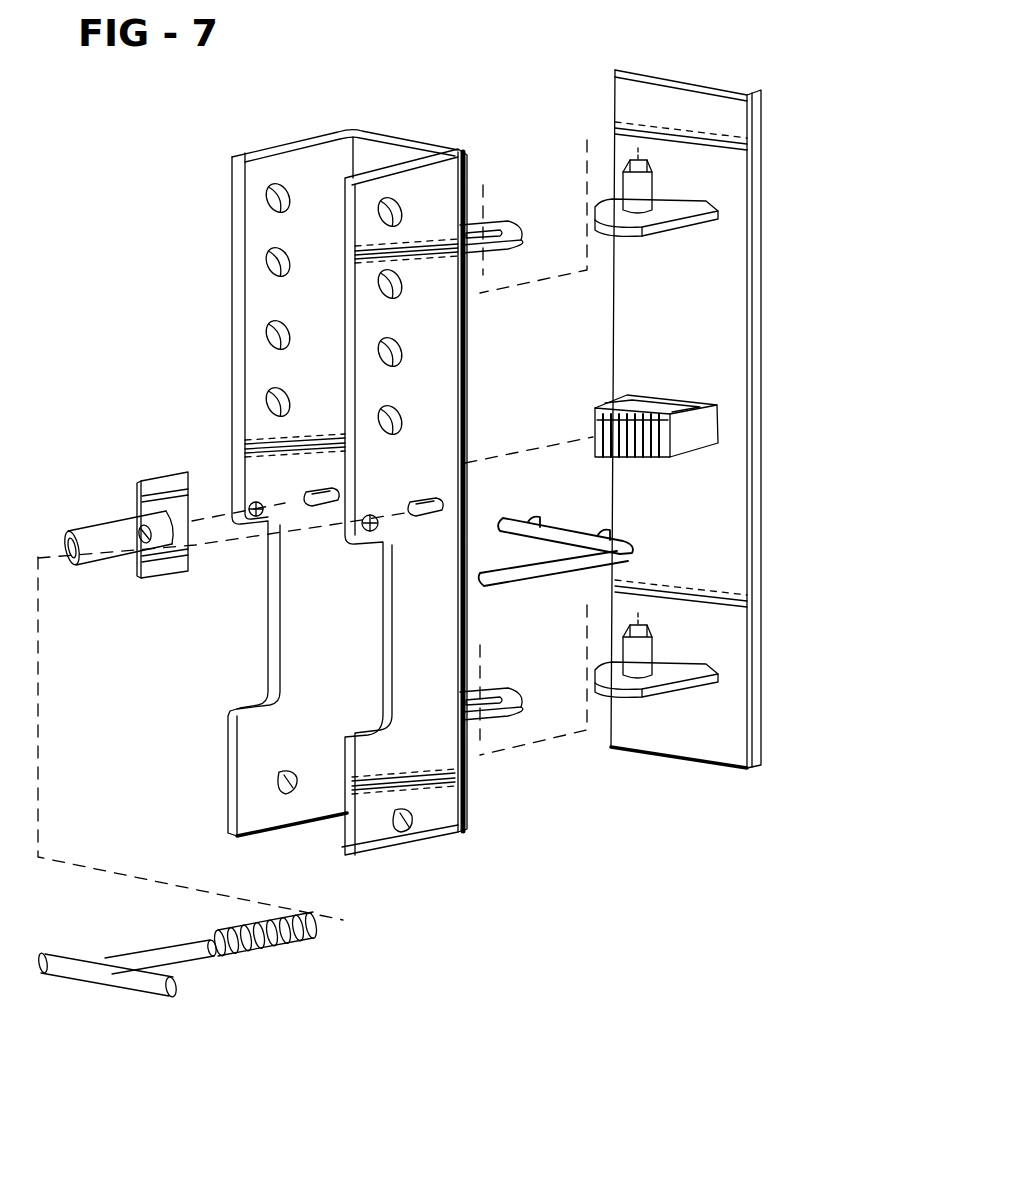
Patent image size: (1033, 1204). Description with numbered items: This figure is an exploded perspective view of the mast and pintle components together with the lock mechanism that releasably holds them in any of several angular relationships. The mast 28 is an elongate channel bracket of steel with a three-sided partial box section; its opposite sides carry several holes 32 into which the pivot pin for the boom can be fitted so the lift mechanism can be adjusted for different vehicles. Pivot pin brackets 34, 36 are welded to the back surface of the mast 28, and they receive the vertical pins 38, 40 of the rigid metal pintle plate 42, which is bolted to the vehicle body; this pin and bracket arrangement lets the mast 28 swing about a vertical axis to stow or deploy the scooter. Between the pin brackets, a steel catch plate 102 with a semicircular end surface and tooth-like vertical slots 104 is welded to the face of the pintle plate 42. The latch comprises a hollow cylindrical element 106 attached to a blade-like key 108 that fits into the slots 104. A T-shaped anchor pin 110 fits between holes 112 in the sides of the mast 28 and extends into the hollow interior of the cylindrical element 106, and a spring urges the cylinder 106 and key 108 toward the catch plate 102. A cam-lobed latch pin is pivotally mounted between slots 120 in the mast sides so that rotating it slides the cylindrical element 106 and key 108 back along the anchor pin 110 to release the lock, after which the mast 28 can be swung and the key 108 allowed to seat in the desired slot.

The mast 28 is at (240, 317).
The holes 32 is at (268, 202).
The pivot pin bracket 34 is at (502, 236).
The pivot pin bracket 36 is at (504, 702).
The vertical pin 38 is at (655, 186).
The vertical pin 40 is at (655, 652).
The pintle plate 42 is at (730, 328).
The catch plate 102 is at (705, 432).
The slots 104 is at (596, 430).
The cylindrical element 106 is at (104, 518).
The key 108 is at (186, 478).
The T-shaped anchor pin 110 is at (156, 950).
The holes 112 is at (364, 530).
The slots 120 is at (322, 490).